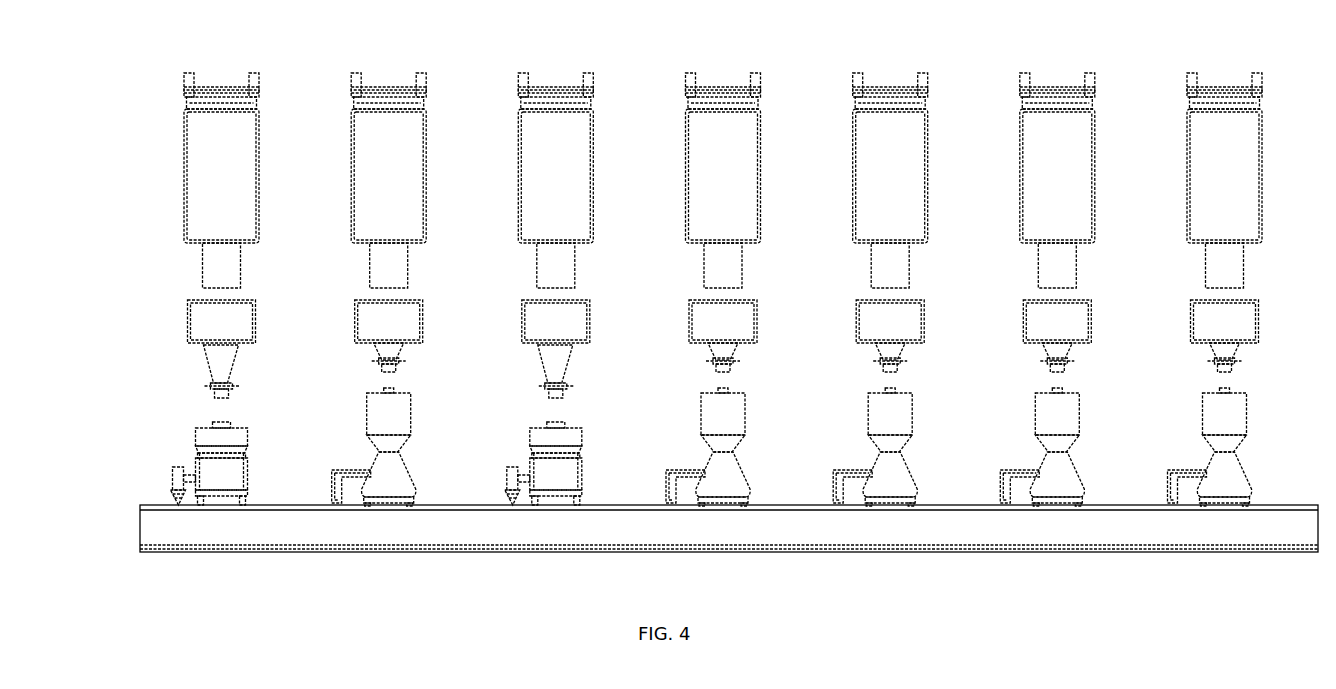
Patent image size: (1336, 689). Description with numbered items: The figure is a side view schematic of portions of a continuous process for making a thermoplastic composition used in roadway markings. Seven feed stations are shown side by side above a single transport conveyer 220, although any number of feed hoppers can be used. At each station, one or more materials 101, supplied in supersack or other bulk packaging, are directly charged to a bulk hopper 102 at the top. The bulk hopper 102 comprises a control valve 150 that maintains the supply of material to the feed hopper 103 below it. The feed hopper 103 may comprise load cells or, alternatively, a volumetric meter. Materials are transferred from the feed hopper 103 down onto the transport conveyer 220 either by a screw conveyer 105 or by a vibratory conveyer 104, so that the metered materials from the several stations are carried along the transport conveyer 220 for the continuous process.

The materials 101 is at (388, 185).
The bulk hopper 102 is at (207, 330).
The control valve 150 is at (230, 357).
The feed hopper 103 is at (395, 407).
The vibratory conveyer 104 is at (353, 473).
The screw conveyer 105 is at (180, 503).
The transport conveyer 220 is at (768, 523).